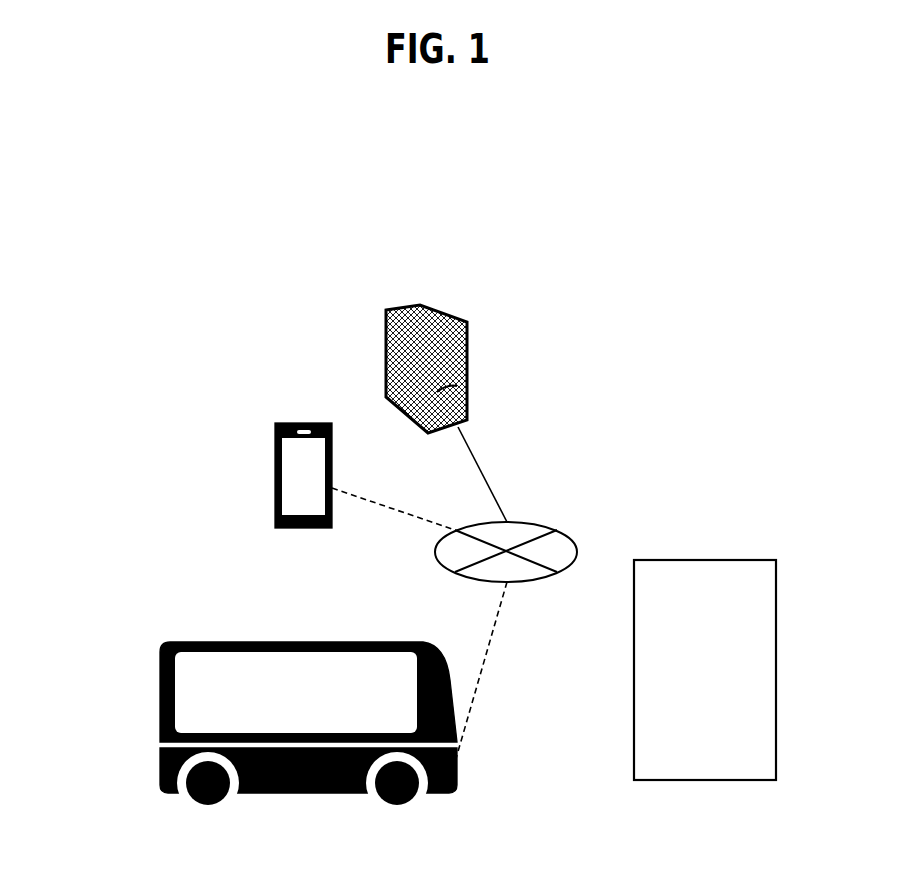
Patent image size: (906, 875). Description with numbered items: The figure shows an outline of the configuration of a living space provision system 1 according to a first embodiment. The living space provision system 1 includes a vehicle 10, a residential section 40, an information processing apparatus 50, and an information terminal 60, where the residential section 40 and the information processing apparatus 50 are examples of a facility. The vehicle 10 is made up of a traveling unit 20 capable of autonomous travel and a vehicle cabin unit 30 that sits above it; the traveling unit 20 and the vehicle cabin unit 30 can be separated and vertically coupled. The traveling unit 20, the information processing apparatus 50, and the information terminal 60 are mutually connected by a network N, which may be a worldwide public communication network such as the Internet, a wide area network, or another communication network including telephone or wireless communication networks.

The living space provision system 1 is at (623, 254).
The vehicle 10 is at (249, 728).
The traveling unit 20 is at (277, 781).
The vehicle cabin unit 30 is at (160, 712).
The residential section 40 is at (687, 560).
The information processing apparatus 50 is at (447, 312).
The information terminal 60 is at (283, 423).
The network N is at (532, 522).